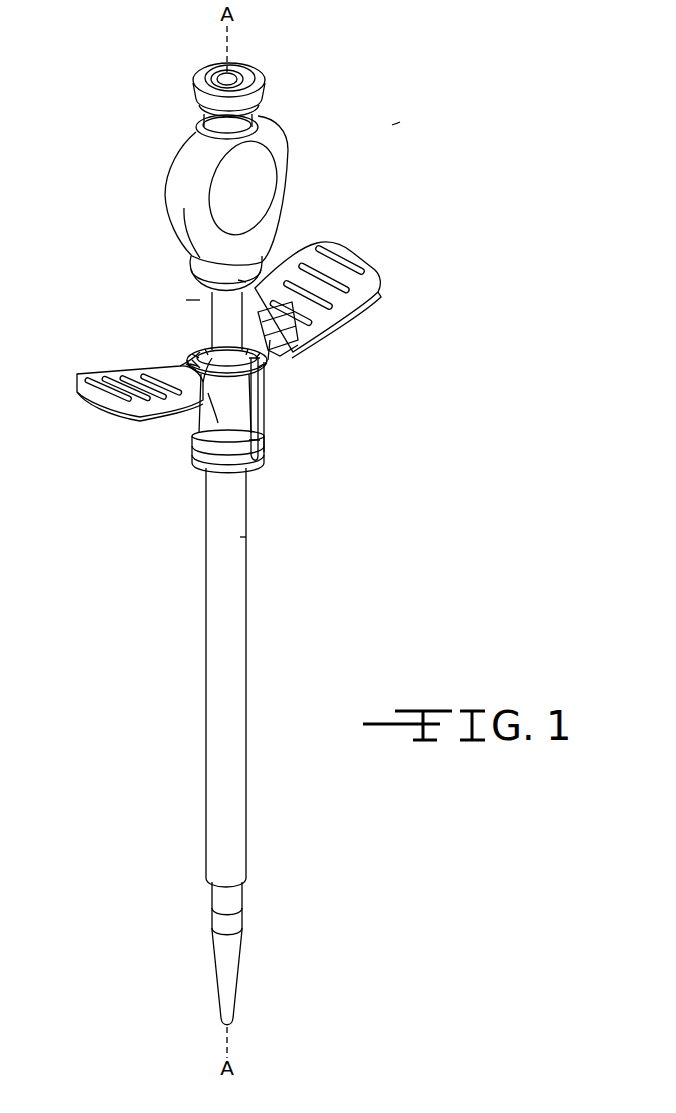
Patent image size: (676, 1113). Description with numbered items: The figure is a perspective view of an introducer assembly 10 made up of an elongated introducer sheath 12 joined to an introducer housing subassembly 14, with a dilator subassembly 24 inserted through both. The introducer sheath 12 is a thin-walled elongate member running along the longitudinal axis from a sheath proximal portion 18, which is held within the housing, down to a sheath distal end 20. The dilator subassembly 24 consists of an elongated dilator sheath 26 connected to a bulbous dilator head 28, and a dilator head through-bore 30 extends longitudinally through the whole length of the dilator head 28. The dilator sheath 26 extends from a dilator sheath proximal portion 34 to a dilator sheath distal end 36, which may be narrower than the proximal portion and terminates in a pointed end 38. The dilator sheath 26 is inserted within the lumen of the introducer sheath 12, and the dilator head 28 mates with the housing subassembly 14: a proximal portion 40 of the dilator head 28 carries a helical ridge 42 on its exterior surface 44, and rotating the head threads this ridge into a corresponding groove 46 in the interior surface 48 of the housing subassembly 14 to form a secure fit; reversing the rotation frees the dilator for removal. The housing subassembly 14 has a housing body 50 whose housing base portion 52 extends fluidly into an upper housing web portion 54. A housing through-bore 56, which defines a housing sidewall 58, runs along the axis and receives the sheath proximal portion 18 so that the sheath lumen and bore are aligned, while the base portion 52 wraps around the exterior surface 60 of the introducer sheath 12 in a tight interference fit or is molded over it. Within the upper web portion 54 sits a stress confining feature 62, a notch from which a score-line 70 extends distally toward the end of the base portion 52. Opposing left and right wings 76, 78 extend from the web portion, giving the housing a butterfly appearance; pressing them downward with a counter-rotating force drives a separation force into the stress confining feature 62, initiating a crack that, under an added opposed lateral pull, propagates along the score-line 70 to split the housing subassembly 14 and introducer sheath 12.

The introducer assembly 10 is at (380, 158).
The introducer sheath 12 is at (237, 653).
The introducer housing subassembly 14 is at (285, 408).
The sheath proximal portion 18 is at (247, 484).
The sheath distal end 20 is at (243, 903).
The dilator subassembly 24 is at (180, 309).
The dilator sheath 26 is at (222, 332).
The dilator head 28 is at (289, 151).
The dilator head through-bore 30 is at (235, 78).
The dilator sheath proximal portion 34 is at (220, 298).
The dilator sheath distal end 36 is at (235, 1024).
The pointed end 38 is at (216, 1013).
The proximal portion of the dilator head 40 is at (244, 279).
The helical ridge 42 is at (186, 219).
The exterior surface of the dilator head 44 is at (277, 303).
The groove 46 is at (190, 354).
The interior surface of the housing subassembly 48 is at (266, 377).
The housing body 50 is at (200, 432).
The housing base portion 52 is at (202, 462).
The upper housing web portion 54 is at (254, 438).
The housing through-bore 56 is at (272, 350).
The housing sidewall 58 is at (186, 365).
The exterior surface of the introducer sheath 60 is at (250, 536).
The stress confining feature 62 is at (222, 345).
The score-line 70 is at (270, 408).
The left wing 76 is at (103, 405).
The right wing 78 is at (352, 255).